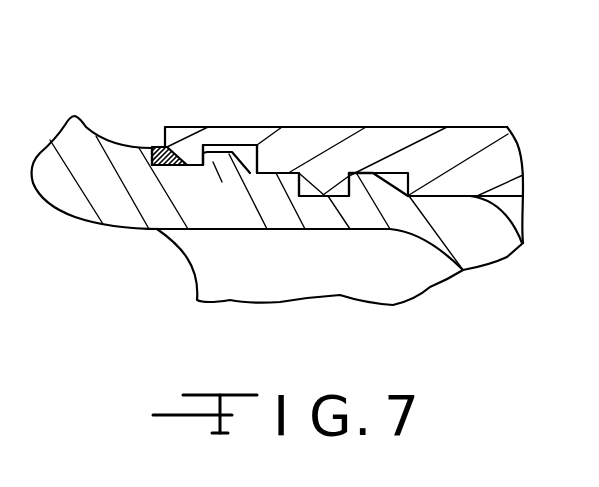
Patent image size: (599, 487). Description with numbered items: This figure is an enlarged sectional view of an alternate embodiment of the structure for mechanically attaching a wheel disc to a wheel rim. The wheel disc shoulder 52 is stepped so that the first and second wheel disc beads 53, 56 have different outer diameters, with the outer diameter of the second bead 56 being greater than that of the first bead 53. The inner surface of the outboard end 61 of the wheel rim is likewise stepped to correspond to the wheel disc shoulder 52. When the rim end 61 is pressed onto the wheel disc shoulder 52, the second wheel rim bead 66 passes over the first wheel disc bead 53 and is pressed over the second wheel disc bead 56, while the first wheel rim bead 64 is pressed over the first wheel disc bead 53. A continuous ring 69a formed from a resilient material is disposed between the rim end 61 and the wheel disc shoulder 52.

The wheel disc shoulder 52 is at (238, 217).
The first wheel disc bead 53 is at (370, 196).
The second wheel disc bead 56 is at (217, 162).
The outboard end of the wheel rim 61 is at (400, 140).
The first wheel rim bead 64 is at (328, 172).
The second wheel rim bead 66 is at (188, 150).
The continuous ring 69a is at (158, 145).